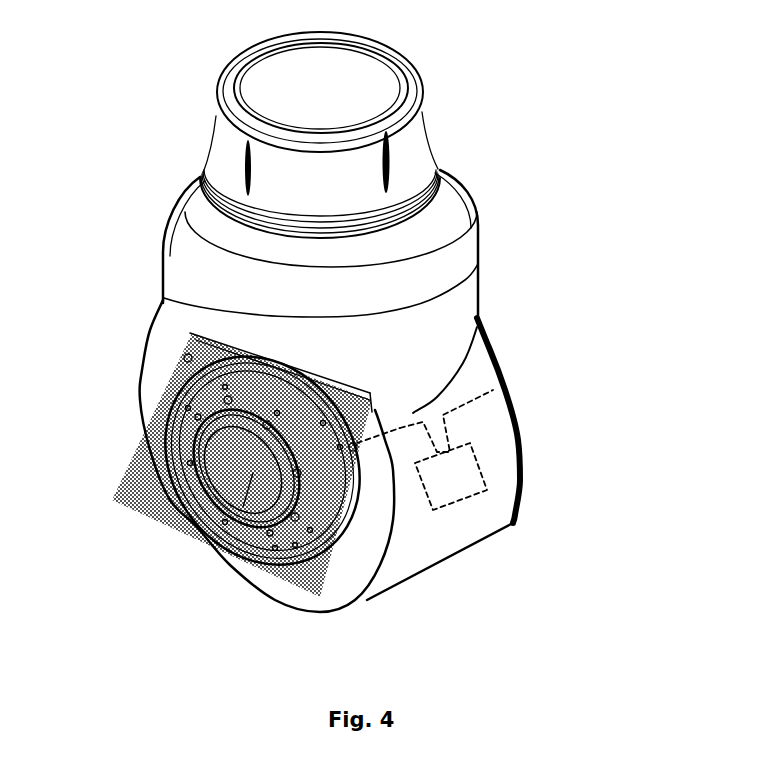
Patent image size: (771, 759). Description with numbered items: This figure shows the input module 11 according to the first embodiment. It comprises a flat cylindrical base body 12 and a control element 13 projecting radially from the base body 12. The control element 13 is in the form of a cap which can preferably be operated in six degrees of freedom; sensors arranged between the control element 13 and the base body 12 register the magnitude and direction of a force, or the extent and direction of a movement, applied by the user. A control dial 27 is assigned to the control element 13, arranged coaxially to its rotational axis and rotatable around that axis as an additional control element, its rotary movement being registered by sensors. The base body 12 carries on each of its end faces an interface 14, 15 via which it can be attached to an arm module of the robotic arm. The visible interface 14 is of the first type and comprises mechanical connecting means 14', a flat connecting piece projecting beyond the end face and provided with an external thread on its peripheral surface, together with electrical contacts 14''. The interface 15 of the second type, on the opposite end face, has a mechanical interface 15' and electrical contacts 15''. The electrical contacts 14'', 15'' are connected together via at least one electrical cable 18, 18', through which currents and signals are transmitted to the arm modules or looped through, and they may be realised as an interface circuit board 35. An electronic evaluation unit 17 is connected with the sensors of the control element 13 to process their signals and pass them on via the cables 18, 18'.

The input module 11 is at (162, 112).
The base body 12 is at (450, 537).
The control element 13 is at (337, 83).
The interface 14 is at (204, 465).
The mechanical connecting means 14' is at (213, 460).
The electrical contacts 14'' is at (223, 489).
The interface 15 is at (631, 294).
The mechanical interface 15' is at (561, 272).
The electrical contacts 15'' is at (639, 363).
The electronic evaluation unit 17 is at (463, 473).
The electrical cable 18 is at (396, 550).
The electrical cable 18' is at (518, 421).
The control dial 27 is at (222, 232).
The interface circuit board 35 is at (228, 552).